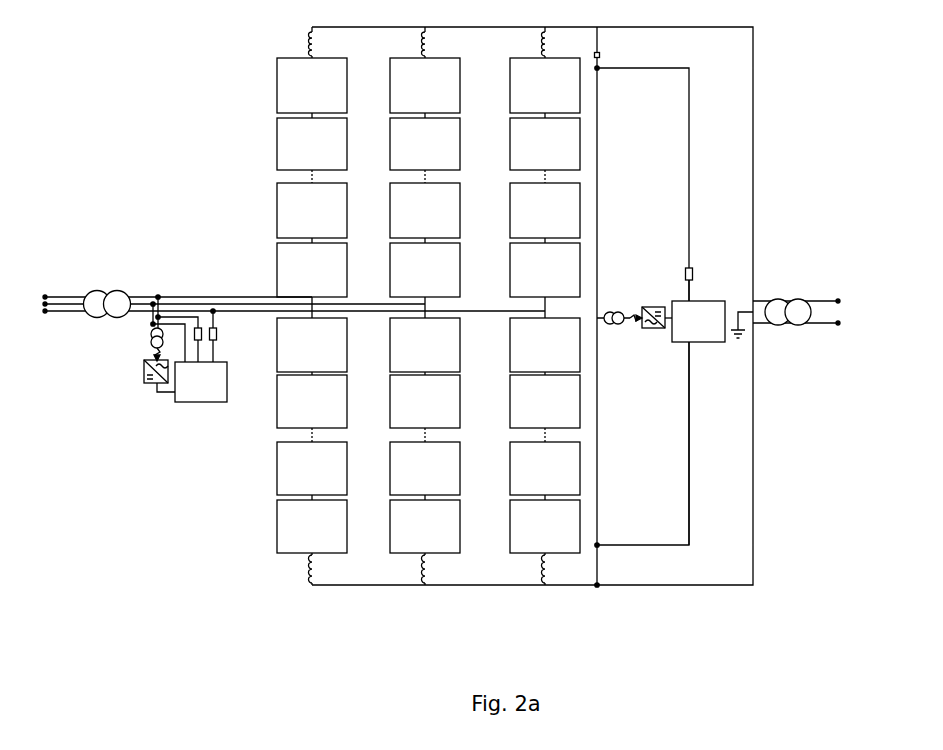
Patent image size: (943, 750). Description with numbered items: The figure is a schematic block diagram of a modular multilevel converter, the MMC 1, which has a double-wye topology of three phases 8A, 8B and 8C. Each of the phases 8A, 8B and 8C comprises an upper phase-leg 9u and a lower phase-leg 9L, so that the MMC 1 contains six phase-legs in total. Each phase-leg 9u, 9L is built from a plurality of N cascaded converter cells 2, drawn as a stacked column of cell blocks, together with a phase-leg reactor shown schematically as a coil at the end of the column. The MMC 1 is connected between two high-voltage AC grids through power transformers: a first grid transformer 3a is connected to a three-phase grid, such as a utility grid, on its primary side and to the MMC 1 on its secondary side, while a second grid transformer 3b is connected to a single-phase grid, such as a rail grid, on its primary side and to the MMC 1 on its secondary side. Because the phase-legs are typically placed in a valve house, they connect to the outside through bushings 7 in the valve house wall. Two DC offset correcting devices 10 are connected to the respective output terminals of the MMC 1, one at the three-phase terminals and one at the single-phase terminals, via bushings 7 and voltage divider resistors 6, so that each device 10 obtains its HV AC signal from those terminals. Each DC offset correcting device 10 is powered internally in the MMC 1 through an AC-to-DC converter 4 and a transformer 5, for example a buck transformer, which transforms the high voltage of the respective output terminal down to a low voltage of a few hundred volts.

The MMC 1 is at (782, 96).
The converter cell 2 is at (551, 343).
The first grid transformer 3a is at (88, 332).
The second grid transformer 3b is at (795, 345).
The AC-to-DC converter 4 is at (153, 392).
The transformer 5 is at (150, 334).
The voltage divider resistor 6 is at (202, 328).
The bushing 7 is at (159, 295).
The phase 8A is at (319, 602).
The phase 8B is at (429, 602).
The phase 8C is at (546, 602).
The upper phase-leg 9u is at (352, 53).
The lower phase-leg 9L is at (352, 312).
The DC offset correcting device 10 is at (204, 398).